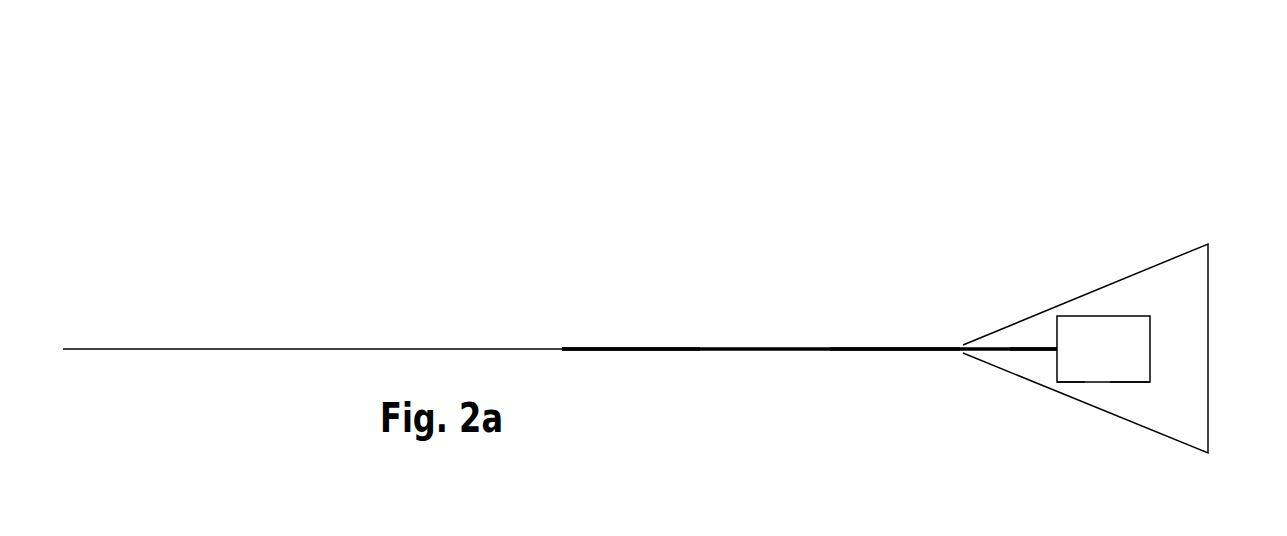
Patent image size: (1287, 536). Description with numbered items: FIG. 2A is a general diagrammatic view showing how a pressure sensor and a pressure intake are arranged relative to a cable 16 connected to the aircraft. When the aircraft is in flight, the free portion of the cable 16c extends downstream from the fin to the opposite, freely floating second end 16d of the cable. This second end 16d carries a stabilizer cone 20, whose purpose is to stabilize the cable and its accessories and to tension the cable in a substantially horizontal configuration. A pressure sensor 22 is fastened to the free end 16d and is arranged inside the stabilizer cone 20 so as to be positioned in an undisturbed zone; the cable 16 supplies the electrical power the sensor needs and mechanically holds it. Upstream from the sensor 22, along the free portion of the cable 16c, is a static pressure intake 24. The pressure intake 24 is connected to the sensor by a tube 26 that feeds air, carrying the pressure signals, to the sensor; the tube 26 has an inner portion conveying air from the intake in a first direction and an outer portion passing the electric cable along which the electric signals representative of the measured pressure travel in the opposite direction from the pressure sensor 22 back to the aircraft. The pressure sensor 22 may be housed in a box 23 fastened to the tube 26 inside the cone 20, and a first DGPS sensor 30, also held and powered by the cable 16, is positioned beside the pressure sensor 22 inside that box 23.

The cable 16 is at (782, 353).
The free portion of the cable 16c is at (413, 348).
The second end of the cable 16d is at (1057, 349).
The stabilizer cone 20 is at (1177, 250).
The pressure sensor 22 is at (1066, 384).
The box 23 is at (1122, 387).
The static pressure intake 24 is at (645, 332).
The tube 26 is at (873, 347).
The first DGPS sensor 30 is at (1120, 312).